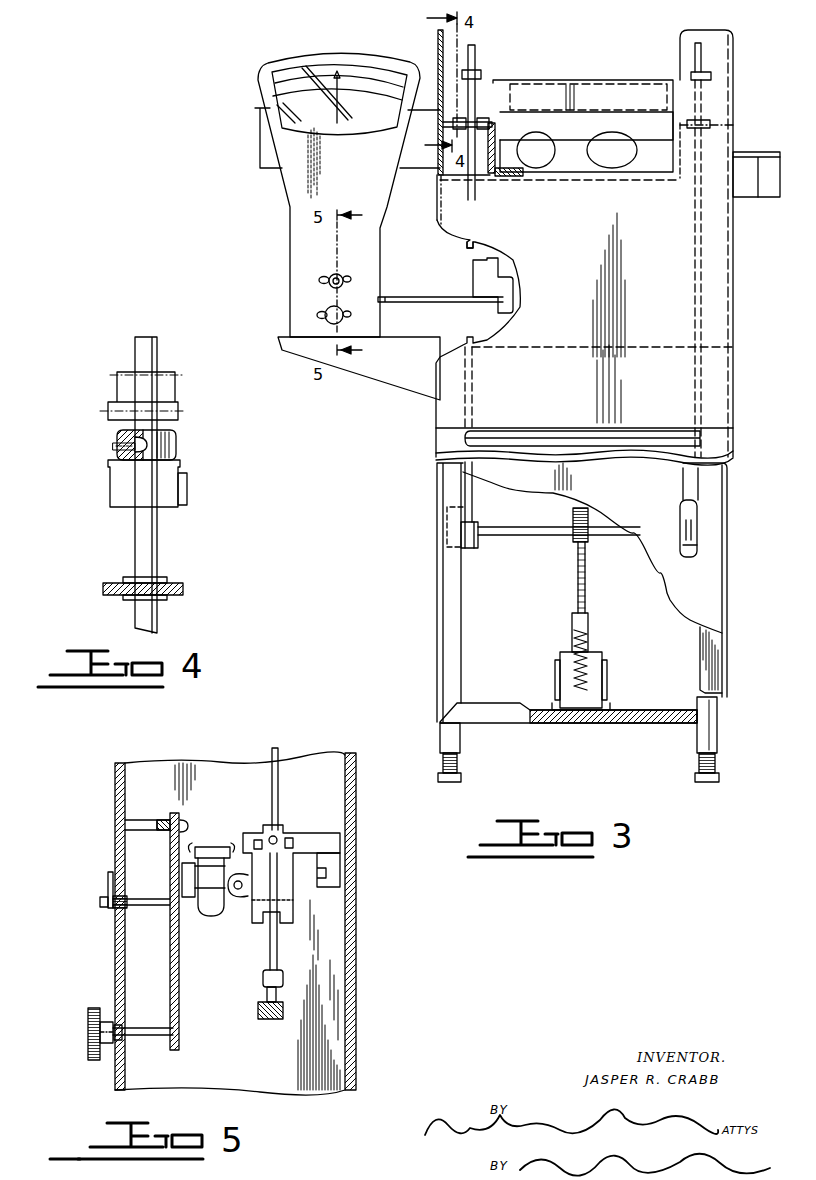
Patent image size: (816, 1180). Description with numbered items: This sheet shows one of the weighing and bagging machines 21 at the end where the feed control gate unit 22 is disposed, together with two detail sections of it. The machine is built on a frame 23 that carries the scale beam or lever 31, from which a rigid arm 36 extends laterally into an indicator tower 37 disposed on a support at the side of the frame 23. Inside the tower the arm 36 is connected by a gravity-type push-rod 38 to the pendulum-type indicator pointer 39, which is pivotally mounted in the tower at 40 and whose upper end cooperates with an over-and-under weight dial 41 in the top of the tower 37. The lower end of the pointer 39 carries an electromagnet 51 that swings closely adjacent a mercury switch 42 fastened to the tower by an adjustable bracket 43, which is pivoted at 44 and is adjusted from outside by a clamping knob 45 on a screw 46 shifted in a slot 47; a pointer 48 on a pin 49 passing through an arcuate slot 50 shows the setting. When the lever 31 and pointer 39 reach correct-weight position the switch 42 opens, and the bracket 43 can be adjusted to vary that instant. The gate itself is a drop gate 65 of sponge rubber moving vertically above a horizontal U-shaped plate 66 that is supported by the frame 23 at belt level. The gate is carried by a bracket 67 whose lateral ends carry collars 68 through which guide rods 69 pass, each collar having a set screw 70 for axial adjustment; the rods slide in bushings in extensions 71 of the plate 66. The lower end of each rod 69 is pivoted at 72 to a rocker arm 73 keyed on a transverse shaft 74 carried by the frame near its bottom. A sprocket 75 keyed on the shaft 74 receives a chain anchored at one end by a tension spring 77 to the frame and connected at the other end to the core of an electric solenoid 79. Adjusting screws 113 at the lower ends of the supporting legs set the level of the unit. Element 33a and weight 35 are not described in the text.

In FIG. 3, the weighing and bagging machine 21 is at (428, 50).
In FIG. 3, the feed control gate unit 22 is at (575, 55).
In FIG. 3, the frame 23 is at (418, 442).
In FIG. 3, the beam or lever 31 is at (497, 308).
In FIG. 3, the tab 33a is at (475, 248).
In FIG. 5, the weight 35 is at (260, 1019).
In FIG. 3, the rigid arm 36 is at (430, 298).
In FIG. 3, the indicator tower 37 is at (292, 234).
In FIG. 5, the indicator tower 37 is at (115, 802).
In FIG. 5, the gravity-type push-rod 38 is at (270, 958).
In FIG. 3, the indicator pointer 39 is at (337, 96).
In FIG. 5, the indicator pointer 39 is at (272, 765).
In FIG. 5, the pivot mounting 40 is at (262, 830).
In FIG. 3, the dial 41 is at (360, 80).
In FIG. 5, the mercury switch 42 is at (212, 916).
In FIG. 5, the adjustable bracket 43 is at (172, 995).
In FIG. 5, the bracket pivot 44 is at (170, 835).
In FIG. 3, the clamping knob 45 is at (324, 320).
In FIG. 5, the clamping knob 45 is at (90, 1025).
In FIG. 5, the screw 46 is at (155, 1040).
In FIG. 3, the slot 47 is at (320, 313).
In FIG. 5, the slot 47 is at (124, 1030).
In FIG. 3, the pointer 48 is at (322, 289).
In FIG. 5, the pointer 48 is at (108, 885).
In FIG. 5, the pin 49 is at (130, 905).
In FIG. 3, the arcuate slot 50 is at (329, 279).
In FIG. 5, the arcuate slot 50 is at (125, 900).
In FIG. 5, the electromagnet 51 is at (240, 897).
In FIG. 3, the drop gate 65 is at (552, 80).
In FIG. 3, the U-shaped plate 66 is at (496, 174).
In FIG. 3, the bracket 67 is at (650, 82).
In FIG. 4, the bracket 67 is at (108, 487).
In FIG. 3, the collar 68 is at (480, 70).
In FIG. 4, the collar 68 is at (177, 443).
In FIG. 3, the guide rod 69 is at (473, 190).
In FIG. 4, the guide rod 69 is at (137, 353).
In FIG. 3, the set screw 70 is at (577, 570).
In FIG. 4, the set screw 70 is at (115, 446).
In FIG. 3, the extension 71 is at (443, 118).
In FIG. 4, the extension 71 is at (110, 583).
In FIG. 3, the pivot 72 is at (463, 548).
In FIG. 3, the rocker arm 73 is at (478, 545).
In FIG. 3, the transverse shaft 74 is at (530, 525).
In FIG. 3, the sprocket 75 is at (573, 518).
In FIG. 3, the tension spring 77 is at (573, 640).
In FIG. 3, the electric solenoid 79 is at (603, 660).
In FIG. 3, the adjusting screw 113 is at (460, 763).